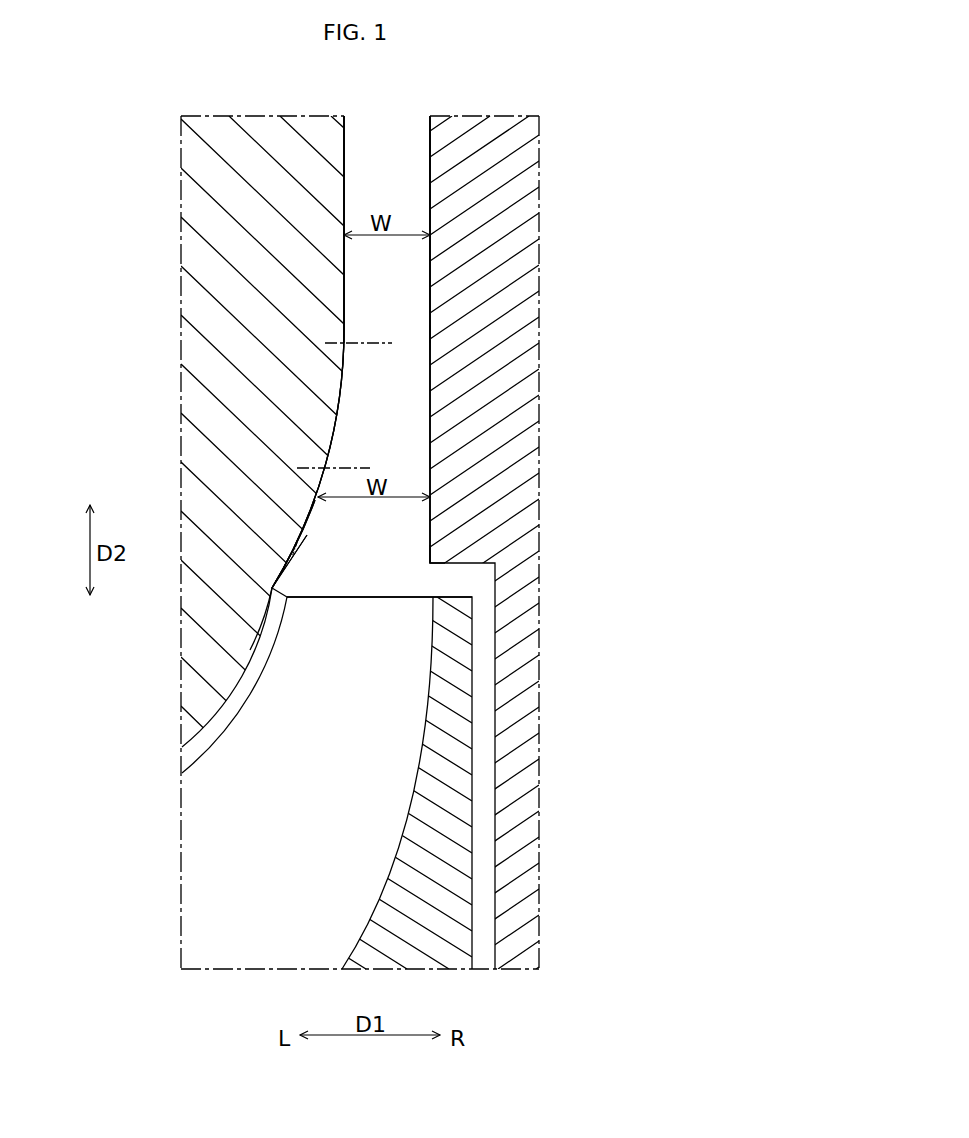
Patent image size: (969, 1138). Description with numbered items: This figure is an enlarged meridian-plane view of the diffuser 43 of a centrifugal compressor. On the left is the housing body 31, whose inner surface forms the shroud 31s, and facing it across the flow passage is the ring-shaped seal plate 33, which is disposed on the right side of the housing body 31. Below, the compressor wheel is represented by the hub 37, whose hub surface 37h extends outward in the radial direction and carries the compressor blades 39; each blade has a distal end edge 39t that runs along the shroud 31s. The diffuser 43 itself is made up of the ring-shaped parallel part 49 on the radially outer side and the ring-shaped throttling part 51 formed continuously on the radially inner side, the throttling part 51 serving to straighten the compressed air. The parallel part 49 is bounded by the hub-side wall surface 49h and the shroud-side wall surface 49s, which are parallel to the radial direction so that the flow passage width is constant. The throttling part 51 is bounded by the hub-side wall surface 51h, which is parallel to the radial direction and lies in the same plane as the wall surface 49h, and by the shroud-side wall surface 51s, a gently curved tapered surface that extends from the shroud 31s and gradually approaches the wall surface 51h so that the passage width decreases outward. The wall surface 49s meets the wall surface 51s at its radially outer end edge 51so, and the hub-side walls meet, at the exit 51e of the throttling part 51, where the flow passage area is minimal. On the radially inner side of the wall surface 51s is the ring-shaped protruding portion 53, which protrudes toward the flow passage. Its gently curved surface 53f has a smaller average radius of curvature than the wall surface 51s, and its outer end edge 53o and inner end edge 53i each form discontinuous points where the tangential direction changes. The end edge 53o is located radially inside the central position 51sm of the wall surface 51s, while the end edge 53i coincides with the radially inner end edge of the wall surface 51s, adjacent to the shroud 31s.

The housing body 31 is at (205, 365).
The shroud 31s is at (233, 682).
The seal plate 33 is at (510, 437).
The hub 37 is at (463, 672).
The hub surface 37h is at (432, 680).
The compressor blade 39 is at (352, 745).
The distal end edge 39t is at (258, 652).
The diffuser 43 is at (712, 252).
The parallel part 49 is at (407, 257).
The shroud-side wall surface of parallel part 49s is at (344, 210).
The hub-side wall surface of parallel part 49h is at (430, 207).
The throttling part 51 is at (408, 480).
The exit of throttling part 51e is at (430, 336).
The shroud-side wall surface of throttling part 51s is at (344, 405).
The outer end edge of throttling part wall surface 51so is at (345, 343).
The central position of wall surface 51sm is at (332, 468).
The hub-side wall surface of throttling part 51h is at (432, 540).
The protruding portion 53 is at (300, 547).
The outer end edge of protruding portion 53o is at (310, 520).
The surface of protruding portion 53f is at (290, 572).
The inner end edge of protruding portion 53i is at (285, 605).